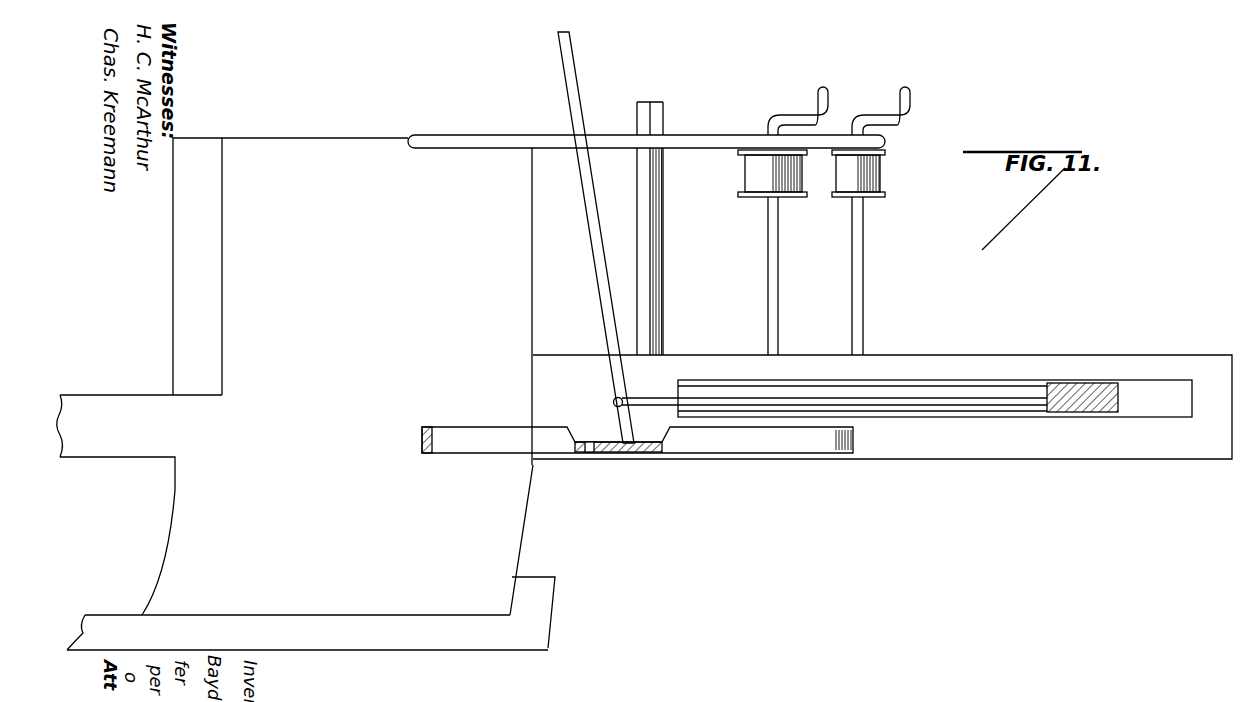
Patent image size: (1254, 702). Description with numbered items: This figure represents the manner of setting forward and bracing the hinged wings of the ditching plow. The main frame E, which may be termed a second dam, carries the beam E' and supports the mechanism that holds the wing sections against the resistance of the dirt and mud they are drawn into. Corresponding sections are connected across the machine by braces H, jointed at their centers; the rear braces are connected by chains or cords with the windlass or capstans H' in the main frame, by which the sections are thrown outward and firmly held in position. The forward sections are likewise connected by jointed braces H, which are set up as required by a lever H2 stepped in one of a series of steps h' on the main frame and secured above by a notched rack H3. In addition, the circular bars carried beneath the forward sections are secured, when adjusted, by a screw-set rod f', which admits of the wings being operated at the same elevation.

The main frame E is at (232, 297).
The beam E' is at (117, 515).
The braces H is at (907, 398).
The windlass or capstans H' is at (809, 221).
The lever H2 is at (596, 237).
The notched rack H3 is at (646, 131).
The steps h' is at (637, 435).
The screw-set rod f' is at (657, 228).